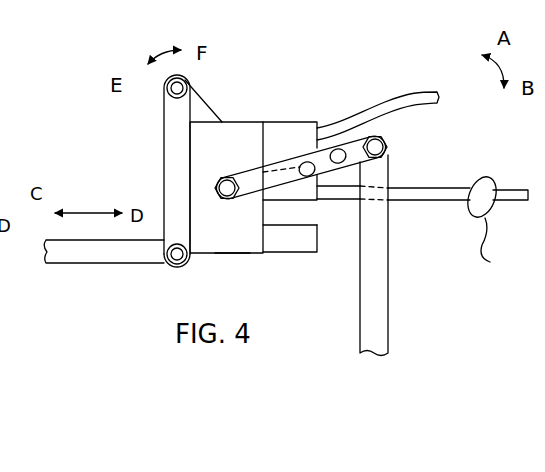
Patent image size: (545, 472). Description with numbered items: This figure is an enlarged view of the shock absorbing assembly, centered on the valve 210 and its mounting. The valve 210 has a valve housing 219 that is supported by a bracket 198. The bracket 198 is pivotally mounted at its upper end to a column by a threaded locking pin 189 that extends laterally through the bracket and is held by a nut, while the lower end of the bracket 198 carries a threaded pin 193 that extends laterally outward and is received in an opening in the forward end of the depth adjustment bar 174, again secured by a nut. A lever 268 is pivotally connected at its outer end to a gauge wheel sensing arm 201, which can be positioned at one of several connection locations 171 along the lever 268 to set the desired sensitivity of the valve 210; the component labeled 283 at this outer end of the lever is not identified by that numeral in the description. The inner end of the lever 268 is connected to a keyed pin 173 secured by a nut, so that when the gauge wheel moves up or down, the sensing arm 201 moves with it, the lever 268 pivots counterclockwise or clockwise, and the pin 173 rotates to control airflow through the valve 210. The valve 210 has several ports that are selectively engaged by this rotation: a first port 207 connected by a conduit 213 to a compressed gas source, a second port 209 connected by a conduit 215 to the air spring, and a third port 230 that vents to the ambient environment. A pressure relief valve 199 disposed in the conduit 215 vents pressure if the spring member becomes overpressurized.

The connection locations 171 is at (336, 165).
The keyed pin 173 is at (234, 176).
The depth adjustment bar 174 is at (89, 267).
The threaded locking pin 189 is at (176, 99).
The threaded pin 193 is at (167, 267).
The bracket 198 is at (164, 176).
The pressure relief valve 199 is at (499, 227).
The gauge wheel sensing arm 201 is at (389, 275).
The first port 207 is at (292, 121).
The second port 209 is at (296, 200).
The valve 210 is at (233, 258).
The conduit 213 is at (392, 92).
The conduit 215 is at (413, 188).
The valve housing 219 is at (250, 240).
The third port 230 is at (288, 254).
The lever 268 is at (280, 160).
The lever pivot bolt 283 is at (388, 139).